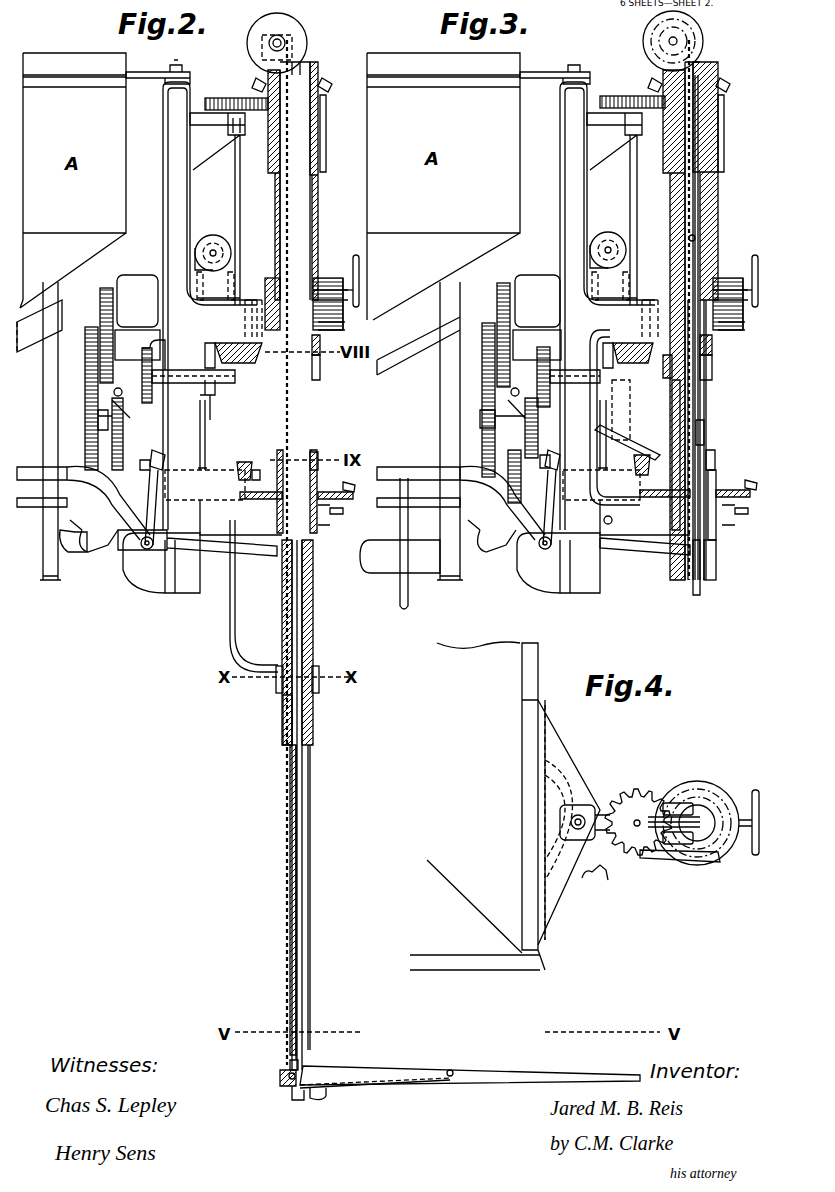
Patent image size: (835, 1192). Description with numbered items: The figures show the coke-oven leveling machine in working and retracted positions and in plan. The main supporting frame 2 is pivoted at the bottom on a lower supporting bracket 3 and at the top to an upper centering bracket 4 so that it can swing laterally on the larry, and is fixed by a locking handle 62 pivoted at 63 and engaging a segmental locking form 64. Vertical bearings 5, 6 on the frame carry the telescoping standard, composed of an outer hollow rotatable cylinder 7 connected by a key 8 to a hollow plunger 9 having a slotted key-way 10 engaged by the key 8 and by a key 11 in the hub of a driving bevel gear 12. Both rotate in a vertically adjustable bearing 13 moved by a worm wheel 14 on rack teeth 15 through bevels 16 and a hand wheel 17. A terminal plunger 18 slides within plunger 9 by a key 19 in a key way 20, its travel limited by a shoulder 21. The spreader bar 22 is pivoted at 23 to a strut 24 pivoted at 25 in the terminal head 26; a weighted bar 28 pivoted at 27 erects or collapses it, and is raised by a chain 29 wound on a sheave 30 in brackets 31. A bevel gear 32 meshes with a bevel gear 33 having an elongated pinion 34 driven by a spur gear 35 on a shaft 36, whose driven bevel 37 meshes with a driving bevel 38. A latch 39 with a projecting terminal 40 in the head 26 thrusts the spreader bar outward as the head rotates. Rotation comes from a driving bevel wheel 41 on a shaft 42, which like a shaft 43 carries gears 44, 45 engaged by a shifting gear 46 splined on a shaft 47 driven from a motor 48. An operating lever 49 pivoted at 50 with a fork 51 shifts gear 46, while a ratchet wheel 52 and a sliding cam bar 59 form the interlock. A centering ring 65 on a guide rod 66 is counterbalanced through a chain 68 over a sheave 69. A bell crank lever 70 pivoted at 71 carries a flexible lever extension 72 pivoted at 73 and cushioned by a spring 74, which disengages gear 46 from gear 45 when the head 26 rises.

In FIG. 2, the main supporting frame 2 is at (210, 306).
In FIG. 3, the main supporting frame 2 is at (607, 306).
In FIG. 2, the lower supporting bracket 3 is at (125, 572).
In FIG. 3, the lower supporting bracket 3 is at (545, 572).
In FIG. 2, the upper centering bracket 4 is at (143, 73).
In FIG. 3, the upper centering bracket 4 is at (553, 72).
In FIG. 4, the upper centering bracket 4 is at (553, 757).
In FIG. 2, the vertical bearing 5 is at (276, 516).
In FIG. 3, the vertical bearing 5 is at (680, 516).
In FIG. 2, the vertical bearing 6 is at (268, 323).
In FIG. 3, the vertical bearing 6 is at (668, 330).
In FIG. 2, the outer supporting hollow rotatable cylinder 7 is at (316, 198).
In FIG. 3, the outer supporting hollow rotatable cylinder 7 is at (711, 208).
In FIG. 4, the outer supporting hollow rotatable cylinder 7 is at (698, 800).
In FIG. 2, the spline or key 8 is at (320, 360).
In FIG. 3, the spline or key 8 is at (714, 350).
In FIG. 2, the hollow plunger 9 is at (283, 603).
In FIG. 3, the hollow plunger 9 is at (673, 405).
In FIG. 2, the longitudinal slotted key-way 10 is at (314, 595).
In FIG. 3, the longitudinal slotted key-way 10 is at (706, 395).
In FIG. 2, the key 11 is at (318, 452).
In FIG. 3, the key 11 is at (716, 452).
In FIG. 2, the driving bevel gear 12 is at (348, 491).
In FIG. 3, the driving bevel gear 12 is at (748, 488).
In FIG. 2, the vertically adjustable bearing 13 is at (272, 276).
In FIG. 3, the vertically adjustable bearing 13 is at (662, 370).
In FIG. 2, the worm wheel 14 is at (335, 322).
In FIG. 3, the worm wheel 14 is at (738, 322).
In FIG. 2, the rack teeth 15 is at (322, 378).
In FIG. 3, the rack teeth 15 is at (714, 365).
In FIG. 2, the bevels 16 is at (331, 284).
In FIG. 3, the bevels 16 is at (726, 284).
In FIG. 2, the hand wheel 17 is at (356, 254).
In FIG. 3, the hand wheel 17 is at (752, 265).
In FIG. 4, the hand wheel 17 is at (759, 838).
In FIG. 2, the terminal plunger 18 is at (290, 912).
In FIG. 3, the terminal plunger 18 is at (688, 437).
In FIG. 2, the key 19 is at (320, 682).
In FIG. 3, the key 19 is at (718, 480).
In FIG. 2, the lateral longitudinal slotted key way 20 is at (311, 780).
In FIG. 3, the lateral longitudinal slotted key way 20 is at (706, 412).
In FIG. 2, the shoulder 21 is at (285, 697).
In FIG. 3, the shoulder 21 is at (663, 160).
In FIG. 2, the spreader bar 22 is at (524, 1075).
In FIG. 3, the spreader bar 22 is at (690, 270).
In FIG. 2, the pivot 23 is at (450, 1070).
In FIG. 2, the bracing arm or strut 24 is at (363, 1088).
In FIG. 3, the bracing arm or strut 24 is at (705, 432).
In FIG. 2, the pivot 25 is at (287, 1076).
In FIG. 2, the terminal head 26 is at (279, 1082).
In FIG. 2, the pivot 27 is at (290, 1070).
In FIG. 3, the pivot 27 is at (696, 238).
In FIG. 2, the vertically movable bar 28 is at (292, 965).
In FIG. 3, the vertically movable bar 28 is at (697, 190).
In FIG. 2, the chain 29 is at (285, 221).
In FIG. 3, the chain 29 is at (700, 68).
In FIG. 2, the winding shaft or sheave 30 is at (285, 40).
In FIG. 3, the winding shaft or sheave 30 is at (681, 40).
In FIG. 4, the winding shaft or sheave 30 is at (714, 792).
In FIG. 4, the brackets 31 is at (665, 800).
In FIG. 4, the bevel gear 32 is at (660, 860).
In FIG. 2, the bevel gear 33 is at (326, 82).
In FIG. 3, the bevel gear 33 is at (730, 80).
In FIG. 4, the bevel gear 33 is at (723, 866).
In FIG. 2, the elongated pinion 34 is at (327, 128).
In FIG. 3, the elongated pinion 34 is at (725, 128).
In FIG. 2, the spur gear 35 is at (227, 97).
In FIG. 3, the spur gear 35 is at (620, 95).
In FIG. 4, the spur gear 35 is at (622, 795).
In FIG. 2, the shaft 36 is at (234, 181).
In FIG. 3, the shaft 36 is at (629, 176).
In FIG. 4, the shaft 36 is at (636, 830).
In FIG. 2, the driven bevel 37 is at (246, 360).
In FIG. 3, the driven bevel 37 is at (620, 342).
In FIG. 2, the driving bevel 38 is at (233, 395).
In FIG. 3, the driving bevel 38 is at (600, 345).
In FIG. 2, the laterally swinging latch 39 is at (300, 1100).
In FIG. 2, the downwardly projecting terminal 40 is at (325, 1098).
In FIG. 2, the driving bevel wheel 41 is at (245, 461).
In FIG. 3, the driving bevel wheel 41 is at (641, 454).
In FIG. 2, the shaft 42 is at (258, 469).
In FIG. 2, the shaft 43 is at (141, 372).
In FIG. 2, the gear 44 is at (112, 495).
In FIG. 3, the gear 44 is at (527, 502).
In FIG. 2, the gear 45 is at (150, 347).
In FIG. 3, the gear 45 is at (537, 366).
In FIG. 2, the shifting gear 46 is at (110, 415).
In FIG. 3, the shifting gear 46 is at (524, 440).
In FIG. 3, the shaft 47 is at (480, 418).
In FIG. 2, the motor 48 is at (137, 317).
In FIG. 3, the motor 48 is at (537, 317).
In FIG. 3, the operating lever 49 is at (604, 440).
In FIG. 2, the pivot 50 is at (118, 390).
In FIG. 3, the pivot 50 is at (495, 386).
In FIG. 2, the terminal clevis or fork 51 is at (106, 408).
In FIG. 3, the terminal clevis or fork 51 is at (490, 406).
In FIG. 2, the ratchet wheel 52 is at (210, 366).
In FIG. 3, the ratchet wheel 52 is at (596, 360).
In FIG. 2, the sliding cam bar 59 is at (212, 420).
In FIG. 3, the sliding cam bar 59 is at (628, 405).
In FIG. 2, the locking handle 62 is at (344, 512).
In FIG. 3, the locking handle 62 is at (749, 512).
In FIG. 3, the pivot 63 is at (608, 525).
In FIG. 2, the segmental locking form 64 is at (118, 548).
In FIG. 3, the segmental locking form 64 is at (522, 548).
In FIG. 4, the segmental locking form 64 is at (585, 882).
In FIG. 2, the center guide or ring 65 is at (276, 682).
In FIG. 3, the center guide or ring 65 is at (731, 560).
In FIG. 2, the guide rod 66 is at (229, 618).
In FIG. 3, the guide rod 66 is at (620, 415).
In FIG. 2, the chain 68 is at (232, 300).
In FIG. 3, the chain 68 is at (628, 300).
In FIG. 2, the supporting sheave 69 is at (213, 240).
In FIG. 3, the supporting sheave 69 is at (608, 238).
In FIG. 2, the bell crank lever 70 is at (256, 553).
In FIG. 3, the bell crank lever 70 is at (643, 555).
In FIG. 2, the pivot 71 is at (147, 550).
In FIG. 3, the pivot 71 is at (546, 550).
In FIG. 2, the flexible lever extension 72 is at (139, 458).
In FIG. 3, the flexible lever extension 72 is at (552, 445).
In FIG. 2, the pivot 73 is at (162, 495).
In FIG. 3, the pivot 73 is at (560, 500).
In FIG. 2, the spring 74 is at (163, 465).
In FIG. 3, the spring 74 is at (560, 475).